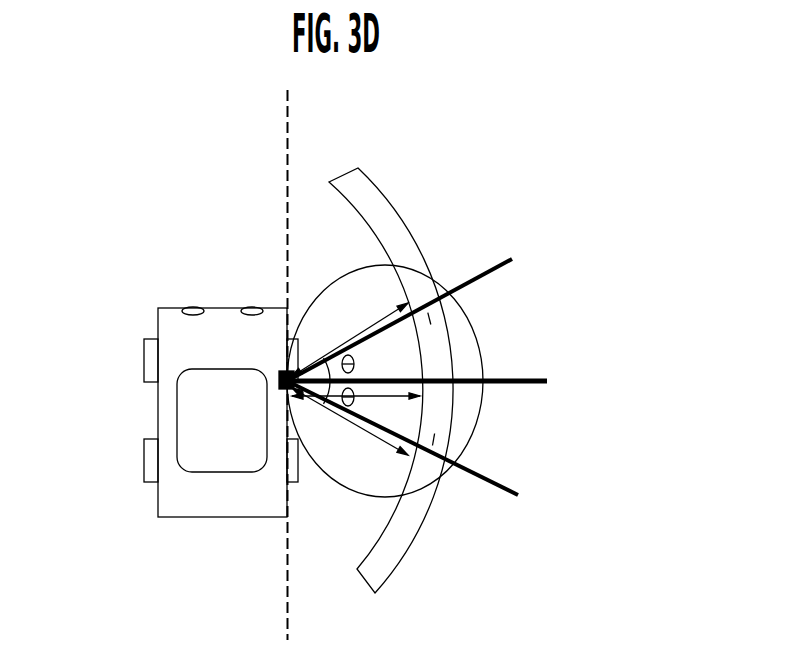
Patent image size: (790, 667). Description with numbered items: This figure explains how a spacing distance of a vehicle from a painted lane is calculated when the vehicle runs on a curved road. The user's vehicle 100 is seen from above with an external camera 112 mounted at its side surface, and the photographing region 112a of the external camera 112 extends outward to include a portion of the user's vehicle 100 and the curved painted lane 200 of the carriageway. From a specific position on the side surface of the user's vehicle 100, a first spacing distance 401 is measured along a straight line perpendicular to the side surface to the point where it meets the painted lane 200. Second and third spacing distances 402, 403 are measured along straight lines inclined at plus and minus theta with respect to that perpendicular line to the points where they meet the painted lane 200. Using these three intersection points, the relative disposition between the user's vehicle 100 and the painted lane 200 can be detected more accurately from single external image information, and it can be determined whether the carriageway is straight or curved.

The user's vehicle 100 is at (220, 313).
The external camera 112 is at (278, 383).
The photographing region 112a is at (477, 331).
The painted lane 200 is at (368, 183).
The first spacing distance 401 is at (356, 409).
The second spacing distance 402 is at (349, 338).
The third spacing distance 403 is at (350, 427).